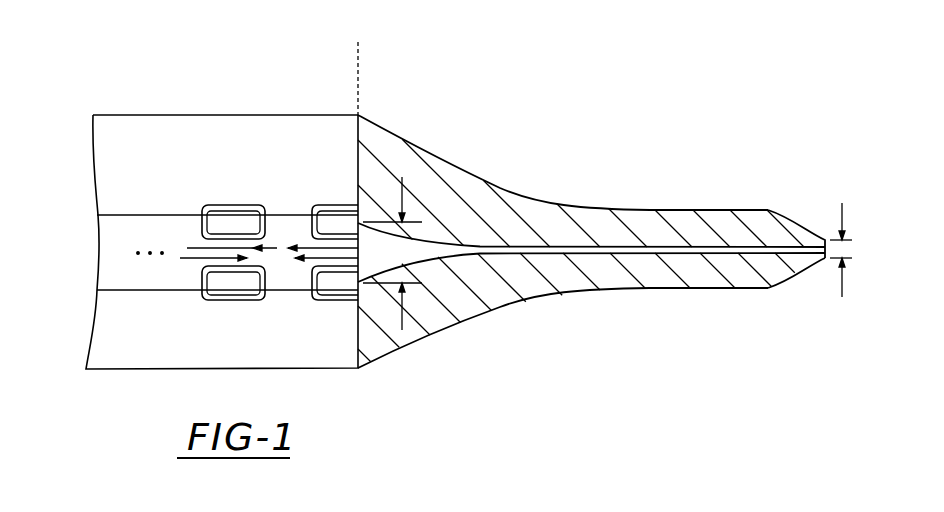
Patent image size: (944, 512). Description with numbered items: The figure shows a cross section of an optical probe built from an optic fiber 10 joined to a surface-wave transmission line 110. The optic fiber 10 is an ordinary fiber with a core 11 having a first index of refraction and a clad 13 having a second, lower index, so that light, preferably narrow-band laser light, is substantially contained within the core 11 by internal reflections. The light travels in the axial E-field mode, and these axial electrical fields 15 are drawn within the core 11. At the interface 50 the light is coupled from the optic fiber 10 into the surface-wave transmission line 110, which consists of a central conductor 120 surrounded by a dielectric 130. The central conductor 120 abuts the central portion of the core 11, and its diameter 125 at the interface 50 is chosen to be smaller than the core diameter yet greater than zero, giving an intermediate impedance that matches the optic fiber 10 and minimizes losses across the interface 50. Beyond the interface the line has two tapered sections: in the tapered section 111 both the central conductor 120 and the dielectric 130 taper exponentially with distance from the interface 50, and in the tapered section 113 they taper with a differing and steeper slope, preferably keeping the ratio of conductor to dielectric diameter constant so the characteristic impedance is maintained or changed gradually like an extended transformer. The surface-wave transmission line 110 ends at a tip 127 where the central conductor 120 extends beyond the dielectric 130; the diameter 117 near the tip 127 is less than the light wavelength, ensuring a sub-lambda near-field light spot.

The optic fiber 10 is at (238, 115).
The core 11 is at (95, 280).
The clad 13 is at (83, 348).
The axial electrical fields 15 is at (197, 210).
The interface 50 is at (355, 68).
The surface-wave transmission line 110 is at (667, 185).
The tapered section 111 is at (553, 200).
The tapered section 113 is at (780, 213).
The diameter 117 is at (850, 253).
The central conductor 120 is at (459, 262).
The diameter 125 is at (417, 233).
The tip 127 is at (830, 265).
The dielectric 130 is at (447, 150).